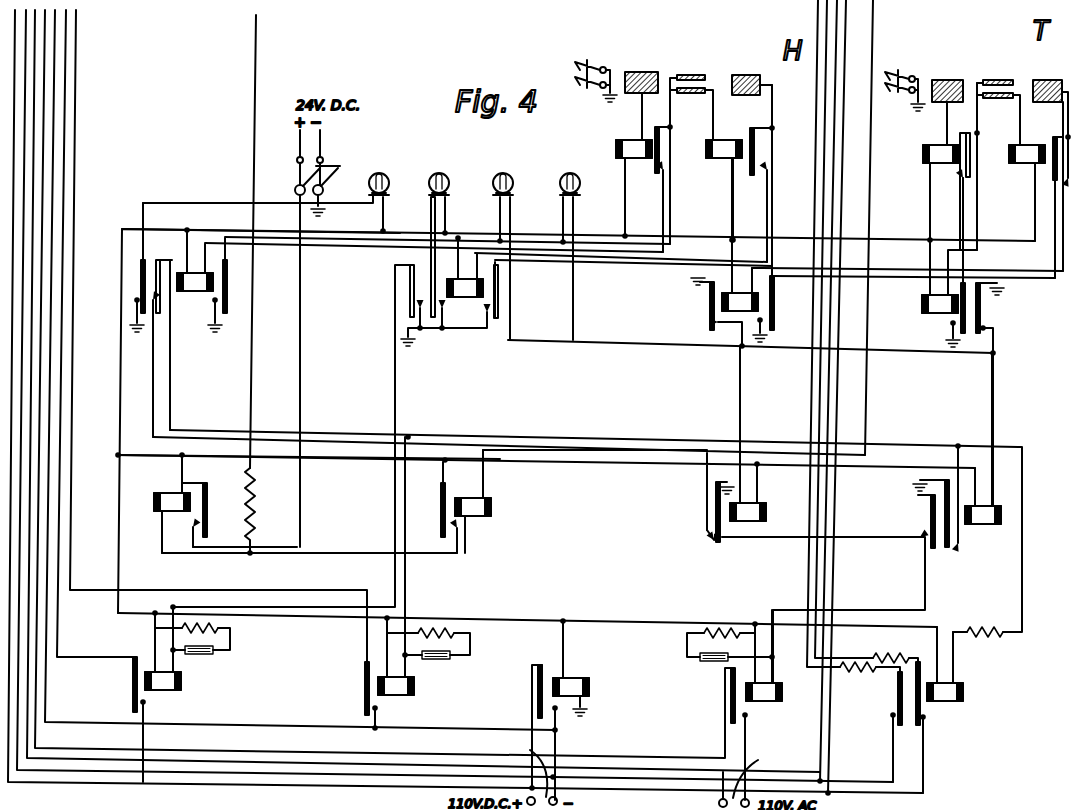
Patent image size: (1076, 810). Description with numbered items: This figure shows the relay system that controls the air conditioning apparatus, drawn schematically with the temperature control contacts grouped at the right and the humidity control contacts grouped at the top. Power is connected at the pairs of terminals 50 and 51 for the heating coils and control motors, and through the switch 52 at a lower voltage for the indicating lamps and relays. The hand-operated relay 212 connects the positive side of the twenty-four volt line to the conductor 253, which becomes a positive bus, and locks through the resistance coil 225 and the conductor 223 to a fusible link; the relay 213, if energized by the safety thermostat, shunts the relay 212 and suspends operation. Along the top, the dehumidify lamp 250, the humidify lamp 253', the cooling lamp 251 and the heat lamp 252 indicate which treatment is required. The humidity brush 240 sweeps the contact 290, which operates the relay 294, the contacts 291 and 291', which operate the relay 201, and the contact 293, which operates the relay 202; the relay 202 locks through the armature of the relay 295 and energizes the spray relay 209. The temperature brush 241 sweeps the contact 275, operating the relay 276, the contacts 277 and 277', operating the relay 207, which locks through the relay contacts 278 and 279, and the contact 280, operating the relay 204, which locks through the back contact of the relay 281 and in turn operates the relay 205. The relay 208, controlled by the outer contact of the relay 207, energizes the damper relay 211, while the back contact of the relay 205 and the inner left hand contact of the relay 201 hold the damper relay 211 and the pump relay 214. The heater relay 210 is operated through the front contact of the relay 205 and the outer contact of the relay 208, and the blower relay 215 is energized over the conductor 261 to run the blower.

The conductor 223 is at (258, 63).
The switch 52 is at (322, 170).
The dehumidify lamp 250 is at (393, 172).
The humidify lamp 253' is at (451, 233).
The cooling lamp 251 is at (516, 167).
The heat lamp 252 is at (584, 167).
The conductor 253 is at (261, 218).
The conductor 261 is at (118, 476).
The relay 201 is at (178, 320).
The relay 202 is at (484, 290).
The relay 204 is at (720, 302).
The relay 207 is at (921, 304).
The relay contact 279 is at (932, 333).
The relay 212 is at (158, 508).
The resistance coil 225 is at (245, 478).
The relay 213 is at (484, 508).
The relay 205 is at (760, 516).
The relay 208 is at (985, 530).
The spray relay 209 is at (183, 683).
The pump relay 214 is at (414, 688).
The blower relay 215 is at (591, 688).
The heater relay 210 is at (765, 702).
The damper relay 211 is at (943, 703).
The pair of terminals 50 is at (530, 751).
The pair of terminals 51 is at (752, 770).
The humidity brush 240 is at (583, 64).
The contact 290 is at (643, 72).
The contact 291 is at (685, 142).
The contact 291' is at (724, 90).
The relay 294 is at (628, 145).
The contact 293 is at (748, 100).
The relay 295 is at (718, 158).
The temperature brush 241 is at (905, 78).
The contact 275 is at (948, 80).
The relay 276 is at (926, 172).
The relay contact 278 is at (965, 180).
The contact 277 is at (998, 95).
The contact 277' is at (1044, 162).
The contact 280 is at (1050, 102).
The relay 281 is at (1012, 153).